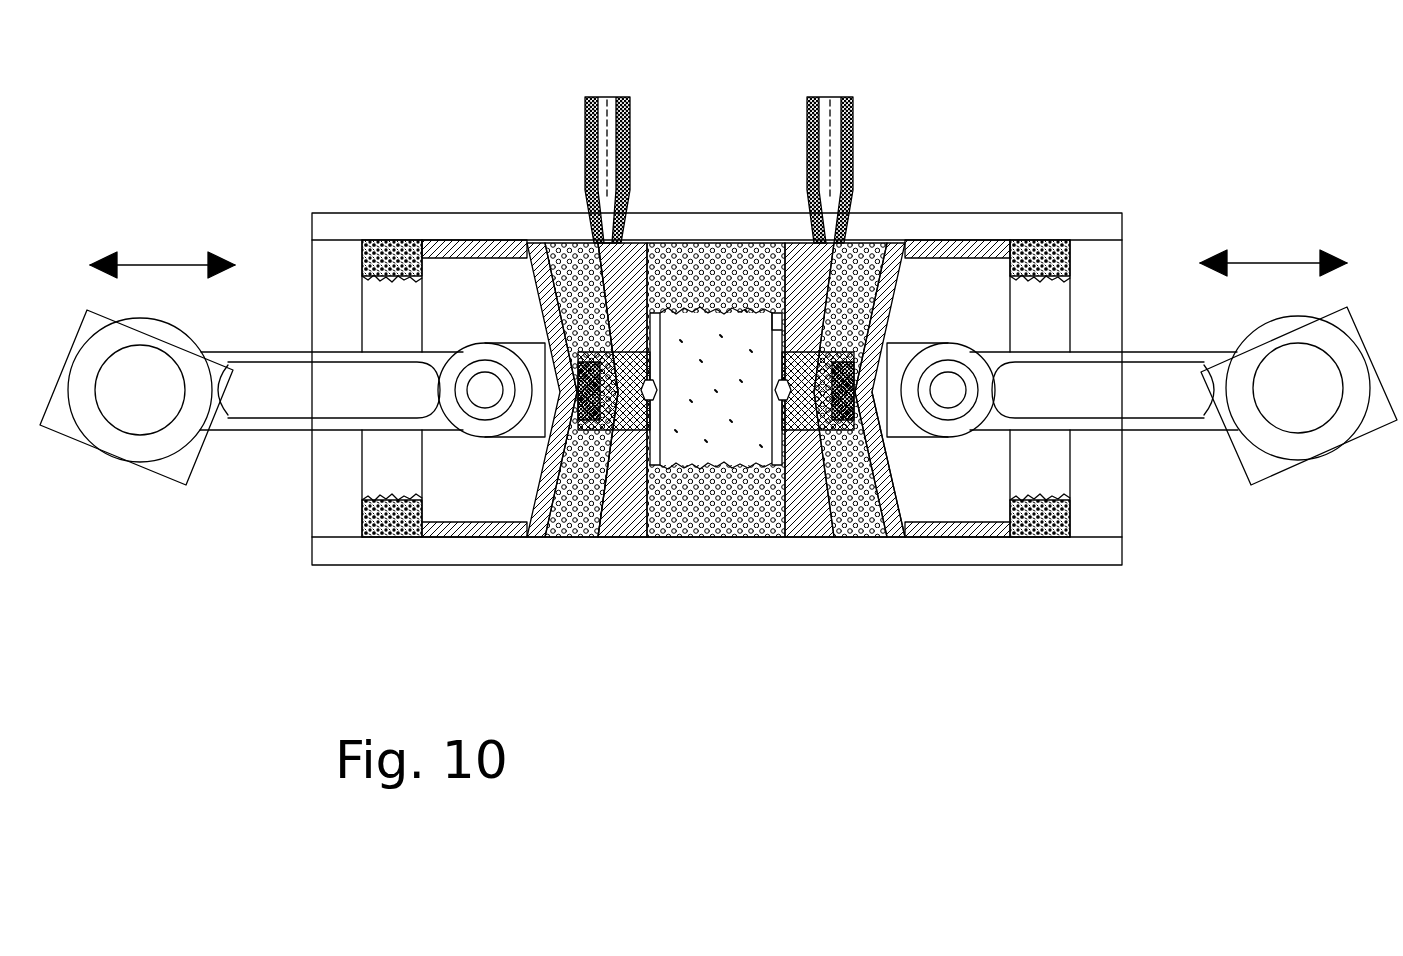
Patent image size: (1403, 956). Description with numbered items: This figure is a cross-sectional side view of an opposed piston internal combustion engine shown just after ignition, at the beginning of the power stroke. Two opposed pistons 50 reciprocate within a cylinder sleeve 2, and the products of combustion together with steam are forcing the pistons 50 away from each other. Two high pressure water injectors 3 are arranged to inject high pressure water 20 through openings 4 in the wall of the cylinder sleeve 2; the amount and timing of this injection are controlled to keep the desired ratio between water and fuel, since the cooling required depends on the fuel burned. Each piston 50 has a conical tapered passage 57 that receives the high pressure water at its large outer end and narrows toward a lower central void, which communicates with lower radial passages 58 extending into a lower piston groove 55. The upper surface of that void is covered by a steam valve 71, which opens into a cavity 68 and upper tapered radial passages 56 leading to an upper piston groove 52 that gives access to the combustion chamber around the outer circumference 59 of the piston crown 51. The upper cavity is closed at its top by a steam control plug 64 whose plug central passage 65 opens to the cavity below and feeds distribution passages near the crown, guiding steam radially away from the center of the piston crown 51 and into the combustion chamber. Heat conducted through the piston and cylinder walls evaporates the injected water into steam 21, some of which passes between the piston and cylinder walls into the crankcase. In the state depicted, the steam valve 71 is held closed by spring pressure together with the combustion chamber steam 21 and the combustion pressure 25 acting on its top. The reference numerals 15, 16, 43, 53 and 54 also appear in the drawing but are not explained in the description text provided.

The cylinder sleeve 2 is at (338, 232).
The high pressure water injector 3 is at (632, 100).
The opening 4 is at (842, 243).
The right bearing 15 is at (957, 357).
The left bearing 16 is at (465, 350).
The high pressure water 20 is at (607, 100).
The steam 21 is at (396, 258).
The combustion pressure 25 is at (705, 430).
The bottom plate 43 is at (460, 540).
The piston 50 is at (390, 458).
The piston crown 51 is at (643, 522).
The upper piston groove 52 is at (624, 525).
The tube outlet 53 is at (623, 245).
The top plate 54 is at (482, 246).
The lower piston groove 55 is at (893, 248).
The upper tapered radial passage 56 is at (636, 250).
The conical tapered passage 57 is at (543, 522).
The lower radial passage 58 is at (890, 522).
The outer circumference 59 is at (790, 250).
The steam control plug 64 is at (690, 250).
The plug central passage 65 is at (586, 245).
The cavity 68 is at (782, 250).
The steam valve 71 is at (830, 522).